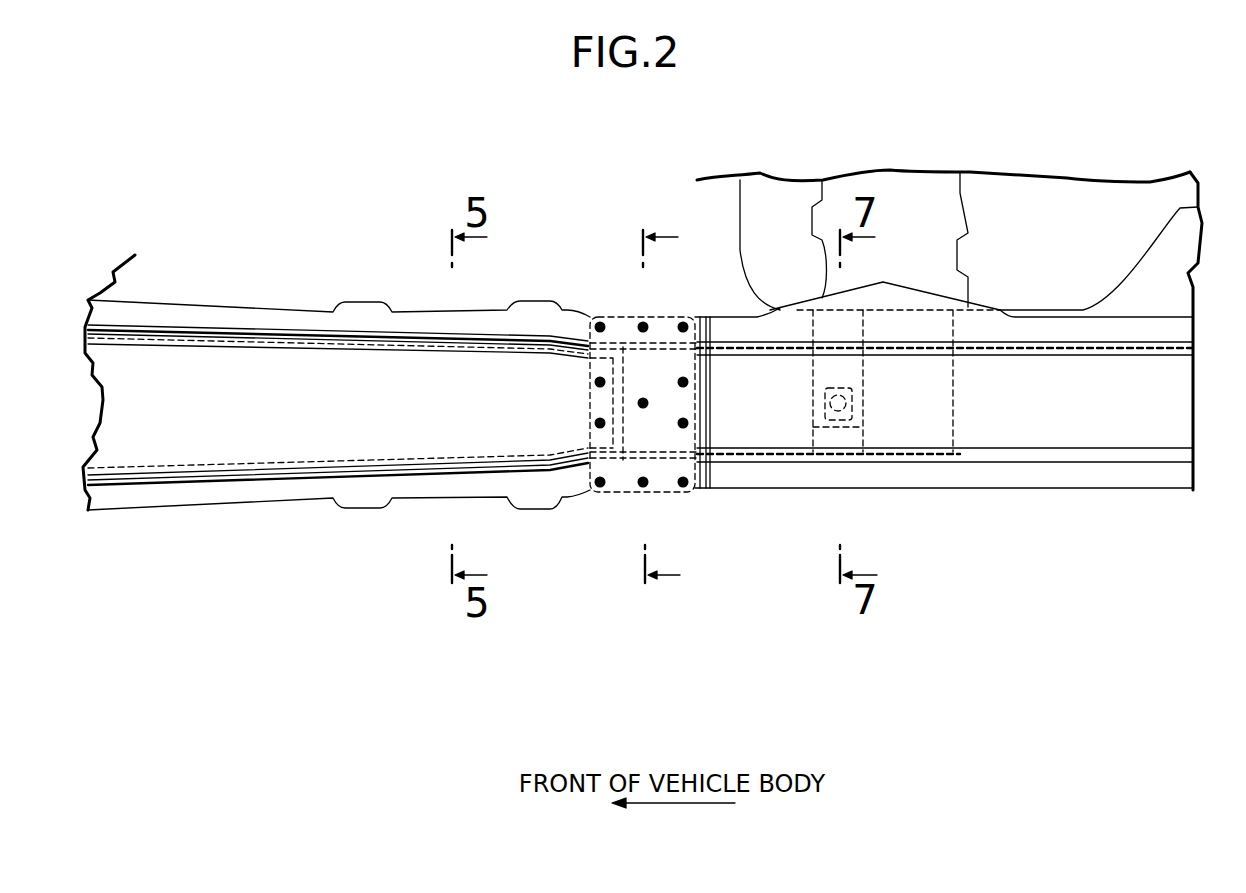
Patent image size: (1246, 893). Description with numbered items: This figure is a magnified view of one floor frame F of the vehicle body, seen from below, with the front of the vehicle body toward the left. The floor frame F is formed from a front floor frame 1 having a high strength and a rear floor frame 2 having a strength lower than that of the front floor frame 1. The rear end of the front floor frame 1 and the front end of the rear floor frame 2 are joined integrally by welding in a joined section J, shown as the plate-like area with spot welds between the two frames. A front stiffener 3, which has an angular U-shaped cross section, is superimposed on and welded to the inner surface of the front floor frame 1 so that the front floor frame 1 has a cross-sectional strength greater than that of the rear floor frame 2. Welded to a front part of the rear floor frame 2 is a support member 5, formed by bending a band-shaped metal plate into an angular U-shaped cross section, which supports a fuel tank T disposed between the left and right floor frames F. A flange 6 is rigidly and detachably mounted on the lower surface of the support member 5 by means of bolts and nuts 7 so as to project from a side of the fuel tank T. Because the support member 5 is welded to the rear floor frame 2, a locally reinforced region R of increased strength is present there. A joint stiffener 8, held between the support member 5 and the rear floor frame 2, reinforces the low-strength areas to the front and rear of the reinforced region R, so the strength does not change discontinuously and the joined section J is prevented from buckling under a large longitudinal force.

The front floor frame 1 is at (558, 488).
The rear floor frame 2 is at (763, 480).
The front stiffener 3 is at (272, 347).
The support member 5 is at (812, 427).
The flange 6 is at (666, 408).
The bolts and nuts 7 is at (862, 406).
The joint stiffener 8 is at (955, 407).
The joined section J is at (677, 494).
The reinforced region R is at (832, 452).
The fuel tank T is at (1000, 203).
The floor frame F is at (732, 687).